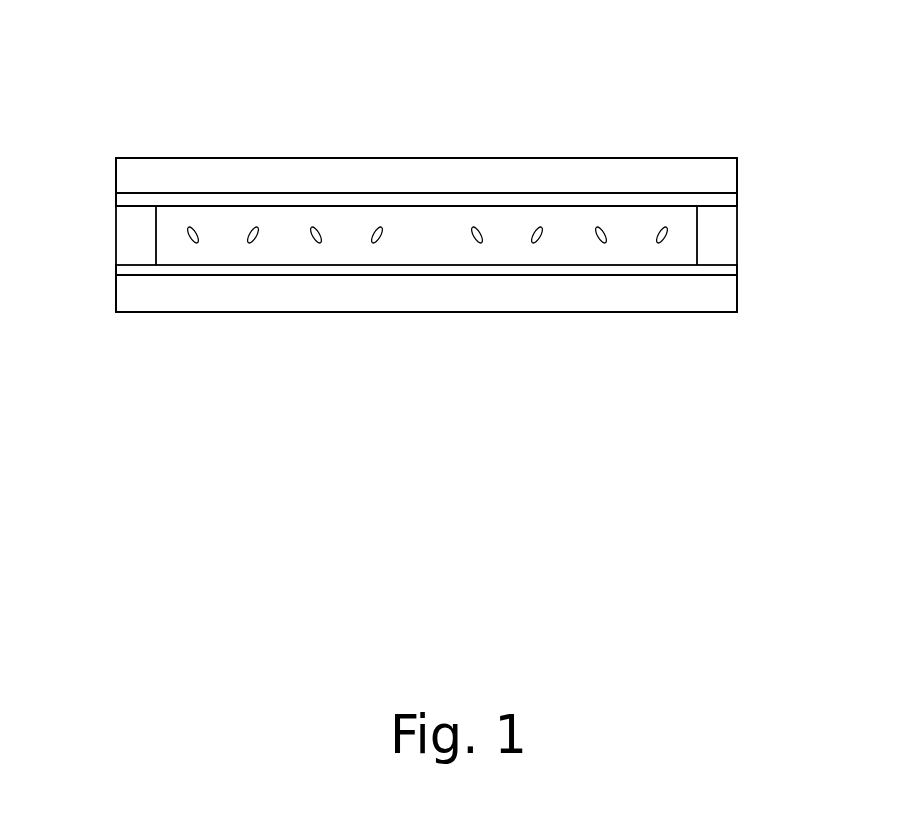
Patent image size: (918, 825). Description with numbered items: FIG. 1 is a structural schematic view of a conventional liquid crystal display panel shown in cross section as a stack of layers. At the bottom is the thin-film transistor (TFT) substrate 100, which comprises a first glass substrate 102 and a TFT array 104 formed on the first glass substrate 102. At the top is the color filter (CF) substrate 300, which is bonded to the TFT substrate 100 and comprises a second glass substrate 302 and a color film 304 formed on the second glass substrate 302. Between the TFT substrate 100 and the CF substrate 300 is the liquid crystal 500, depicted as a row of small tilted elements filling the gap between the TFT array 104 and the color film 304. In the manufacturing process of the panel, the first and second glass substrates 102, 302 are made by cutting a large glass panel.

The thin-film transistor substrate 100 is at (737, 288).
The first glass substrate 102 is at (188, 292).
The TFT array 104 is at (508, 267).
The color filter substrate 300 is at (116, 180).
The second glass substrate 302 is at (208, 177).
The color film 304 is at (408, 200).
The liquid crystal 500 is at (538, 230).